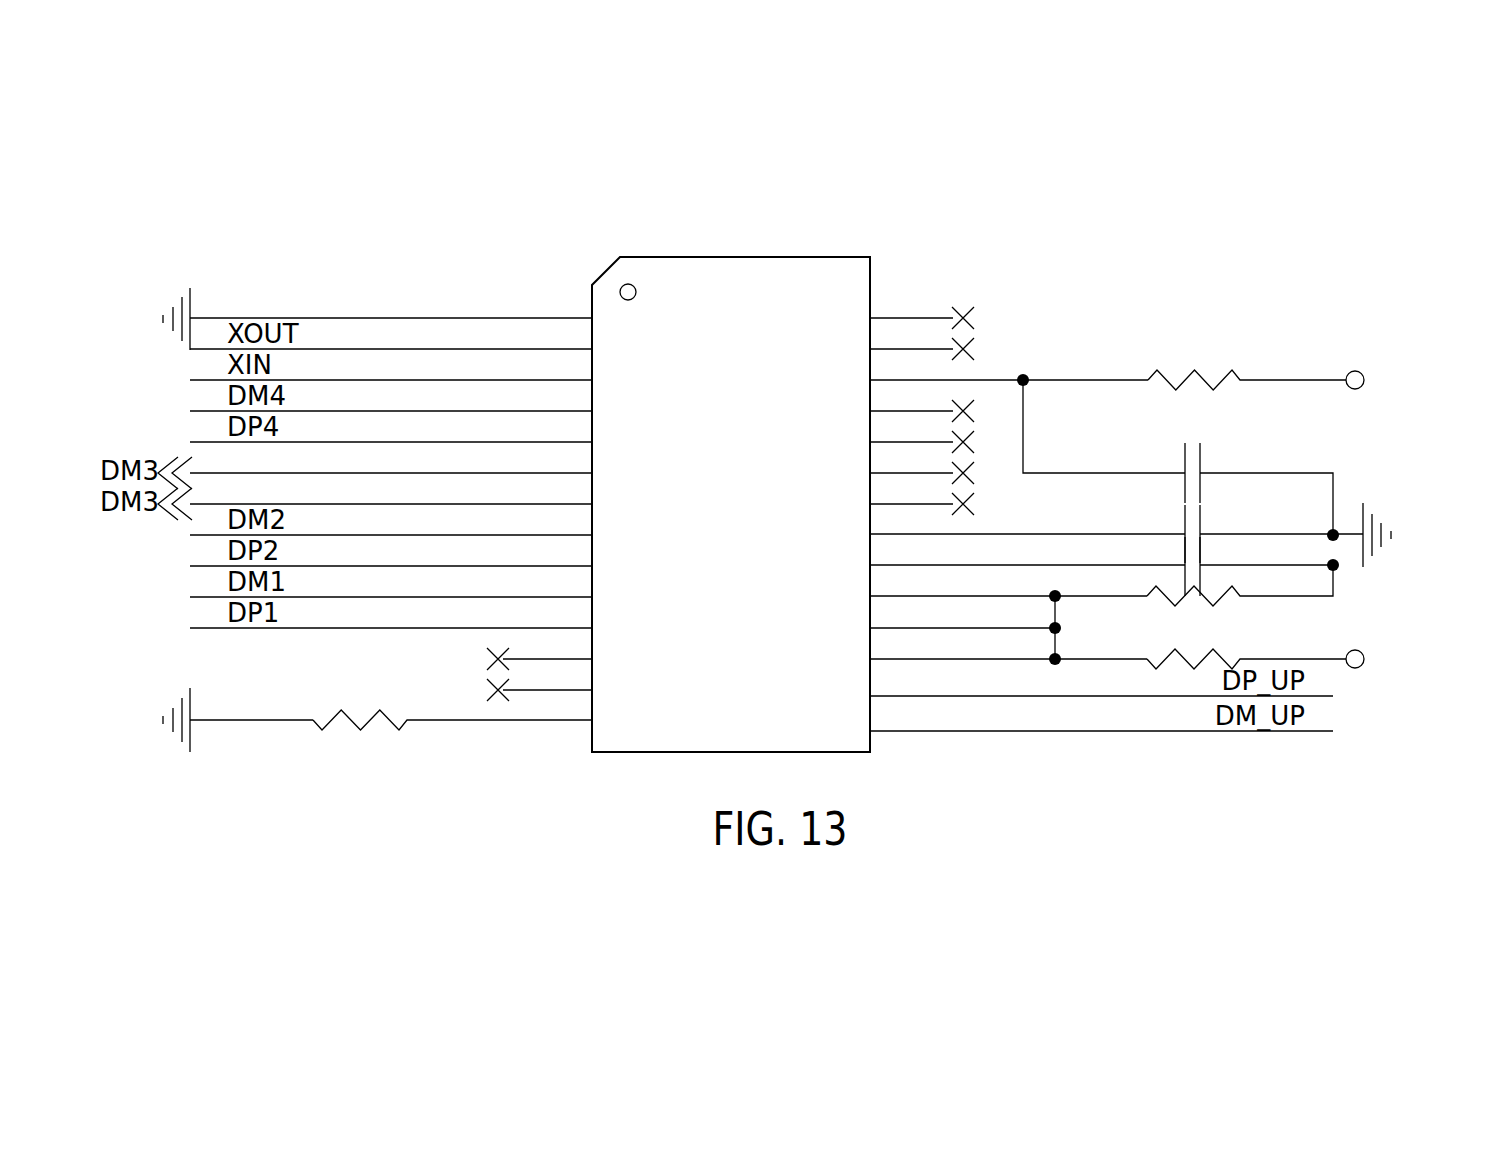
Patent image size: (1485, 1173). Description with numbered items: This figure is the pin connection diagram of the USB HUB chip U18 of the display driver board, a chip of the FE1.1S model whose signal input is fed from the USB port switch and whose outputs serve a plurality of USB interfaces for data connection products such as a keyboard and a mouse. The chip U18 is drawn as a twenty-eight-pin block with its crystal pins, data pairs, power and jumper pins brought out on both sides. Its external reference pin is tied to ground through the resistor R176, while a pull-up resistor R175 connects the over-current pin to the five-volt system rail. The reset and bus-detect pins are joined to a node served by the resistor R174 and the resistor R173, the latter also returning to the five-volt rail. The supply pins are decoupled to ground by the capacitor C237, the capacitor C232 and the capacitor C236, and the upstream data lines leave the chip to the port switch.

The USB hub controller FE1.1s U18 is at (745, 257).
The resistor 10K R175 is at (1275, 368).
The resistor 2.7K R176 is at (377, 717).
The resistor 100K R174 is at (1220, 595).
The resistor 47K R173 is at (1285, 648).
The capacitor 6.8nF/16V C237 is at (1182, 457).
The capacitor 10uF/16V C232 is at (1236, 534).
The capacitor 10uF/16V C236 is at (1224, 565).